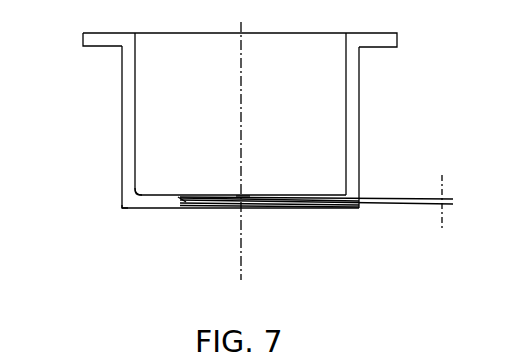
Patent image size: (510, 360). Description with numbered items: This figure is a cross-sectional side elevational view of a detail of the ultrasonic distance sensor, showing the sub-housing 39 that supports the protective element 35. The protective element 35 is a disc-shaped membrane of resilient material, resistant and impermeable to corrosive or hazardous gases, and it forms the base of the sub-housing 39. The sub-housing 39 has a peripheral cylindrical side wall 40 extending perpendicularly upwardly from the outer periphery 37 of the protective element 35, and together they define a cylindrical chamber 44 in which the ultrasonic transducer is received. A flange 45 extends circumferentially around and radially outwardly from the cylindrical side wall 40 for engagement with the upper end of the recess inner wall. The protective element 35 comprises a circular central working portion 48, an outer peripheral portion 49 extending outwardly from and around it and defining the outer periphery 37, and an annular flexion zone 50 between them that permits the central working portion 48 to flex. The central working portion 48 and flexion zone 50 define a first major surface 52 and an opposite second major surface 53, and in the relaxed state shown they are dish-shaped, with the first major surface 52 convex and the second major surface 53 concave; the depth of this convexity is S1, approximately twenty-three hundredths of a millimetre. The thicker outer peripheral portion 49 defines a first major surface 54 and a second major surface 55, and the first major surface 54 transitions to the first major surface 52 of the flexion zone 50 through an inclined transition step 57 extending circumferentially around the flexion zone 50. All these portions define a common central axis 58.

The protective element 35 is at (152, 209).
The outer periphery 37 is at (123, 202).
The sub-housing 39 is at (356, 153).
The cylindrical side wall 40 is at (122, 151).
The cylindrical chamber 44 is at (333, 117).
The flange 45 is at (400, 38).
The central working portion 48 is at (249, 197).
The outer peripheral portion 49 is at (172, 208).
The annular flexion zone 50 is at (198, 208).
The first major surface 52 is at (206, 204).
The second major surface 53 is at (228, 209).
The first major surface of outer peripheral portion 54 is at (145, 193).
The second major surface of outer peripheral portion 55 is at (129, 211).
The inclined transition step 57 is at (180, 197).
The common central axis 58 is at (245, 55).
The depth of convexity S1 is at (429, 199).